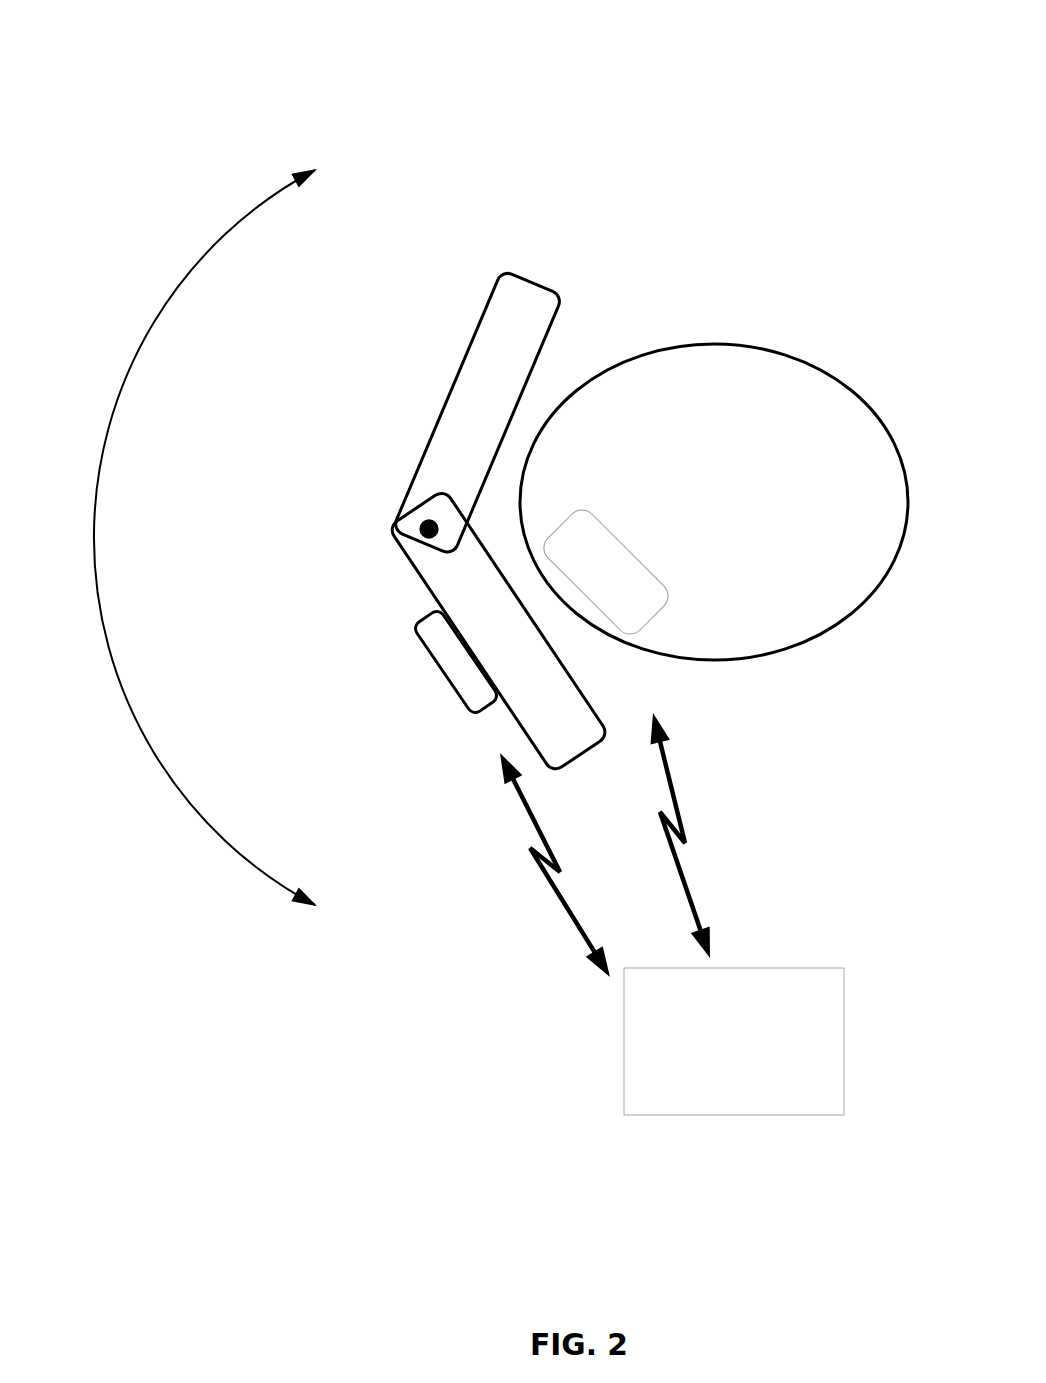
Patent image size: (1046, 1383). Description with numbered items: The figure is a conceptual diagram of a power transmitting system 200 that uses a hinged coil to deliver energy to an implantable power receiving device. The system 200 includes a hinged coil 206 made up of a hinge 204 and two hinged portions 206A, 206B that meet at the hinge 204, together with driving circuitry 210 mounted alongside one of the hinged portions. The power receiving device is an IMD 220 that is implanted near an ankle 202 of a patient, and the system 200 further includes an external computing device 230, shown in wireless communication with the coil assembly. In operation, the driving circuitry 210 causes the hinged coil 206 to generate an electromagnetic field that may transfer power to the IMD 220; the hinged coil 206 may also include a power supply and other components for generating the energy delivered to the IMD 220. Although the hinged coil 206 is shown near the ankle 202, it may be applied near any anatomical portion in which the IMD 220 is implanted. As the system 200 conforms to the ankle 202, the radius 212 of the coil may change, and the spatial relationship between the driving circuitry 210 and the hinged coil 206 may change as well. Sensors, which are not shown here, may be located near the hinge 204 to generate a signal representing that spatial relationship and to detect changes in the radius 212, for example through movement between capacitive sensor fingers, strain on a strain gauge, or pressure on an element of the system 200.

The system 200 is at (447, 60).
The ankle 202 is at (695, 527).
The hinge 204 is at (420, 532).
The hinged coil 206 is at (385, 403).
The hinged portion 206A is at (500, 267).
The hinged portion 206B is at (580, 678).
The driving circuitry 210 is at (455, 692).
The radius 212 is at (204, 537).
The IMD 220 is at (585, 601).
The external computing device 230 is at (719, 1078).